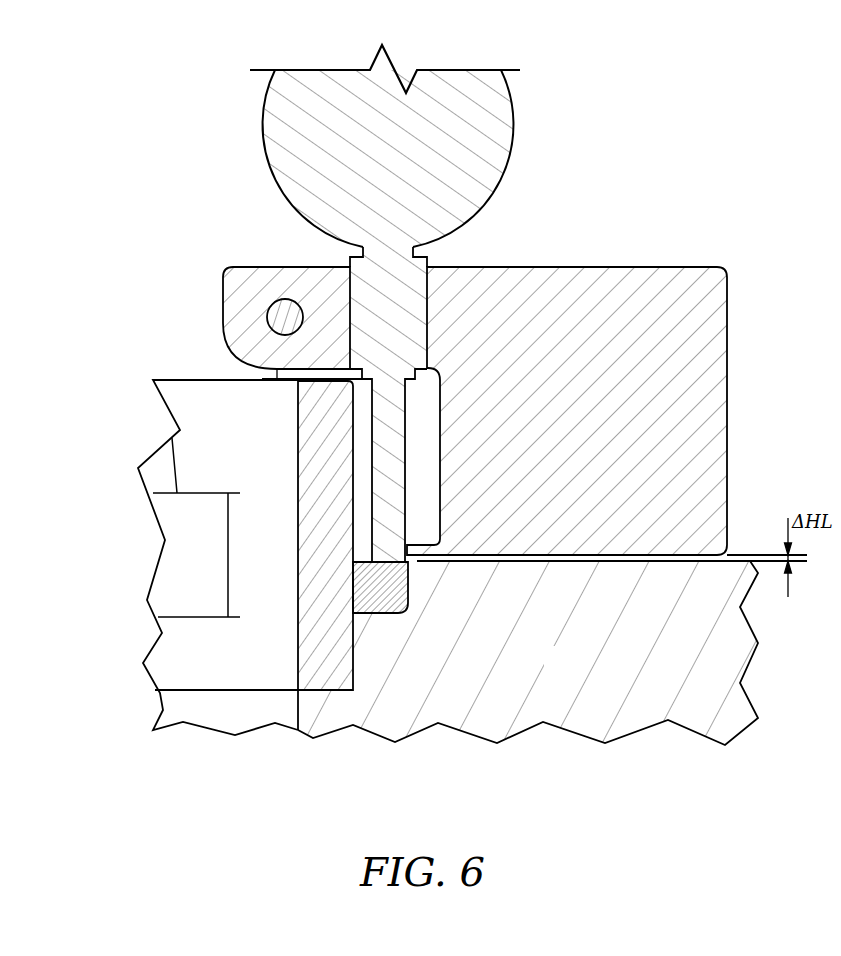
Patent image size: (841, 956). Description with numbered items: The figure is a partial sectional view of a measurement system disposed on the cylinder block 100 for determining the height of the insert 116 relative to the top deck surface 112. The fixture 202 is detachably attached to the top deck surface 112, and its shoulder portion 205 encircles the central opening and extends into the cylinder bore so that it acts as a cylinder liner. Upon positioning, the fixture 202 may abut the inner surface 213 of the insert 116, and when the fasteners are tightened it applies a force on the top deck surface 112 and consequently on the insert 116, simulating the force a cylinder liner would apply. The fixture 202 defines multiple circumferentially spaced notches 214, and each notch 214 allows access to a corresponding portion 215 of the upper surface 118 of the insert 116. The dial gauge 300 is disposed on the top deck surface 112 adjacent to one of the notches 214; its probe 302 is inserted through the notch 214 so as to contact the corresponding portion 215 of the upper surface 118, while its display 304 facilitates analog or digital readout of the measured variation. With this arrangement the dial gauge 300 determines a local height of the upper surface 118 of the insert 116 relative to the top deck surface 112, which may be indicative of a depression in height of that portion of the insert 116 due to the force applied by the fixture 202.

The dial gauge 300 is at (713, 206).
The probe 302 is at (392, 418).
The display 304 is at (491, 112).
The fixture 202 is at (210, 402).
The notches 214 is at (422, 440).
The shoulder portion 205 is at (297, 673).
The upper surface 118 is at (367, 544).
The portions 215 is at (363, 556).
The inner surface 213 is at (352, 598).
The insert 116 is at (380, 600).
The cylinder block 100 is at (578, 667).
The top deck surface 112 is at (737, 555).